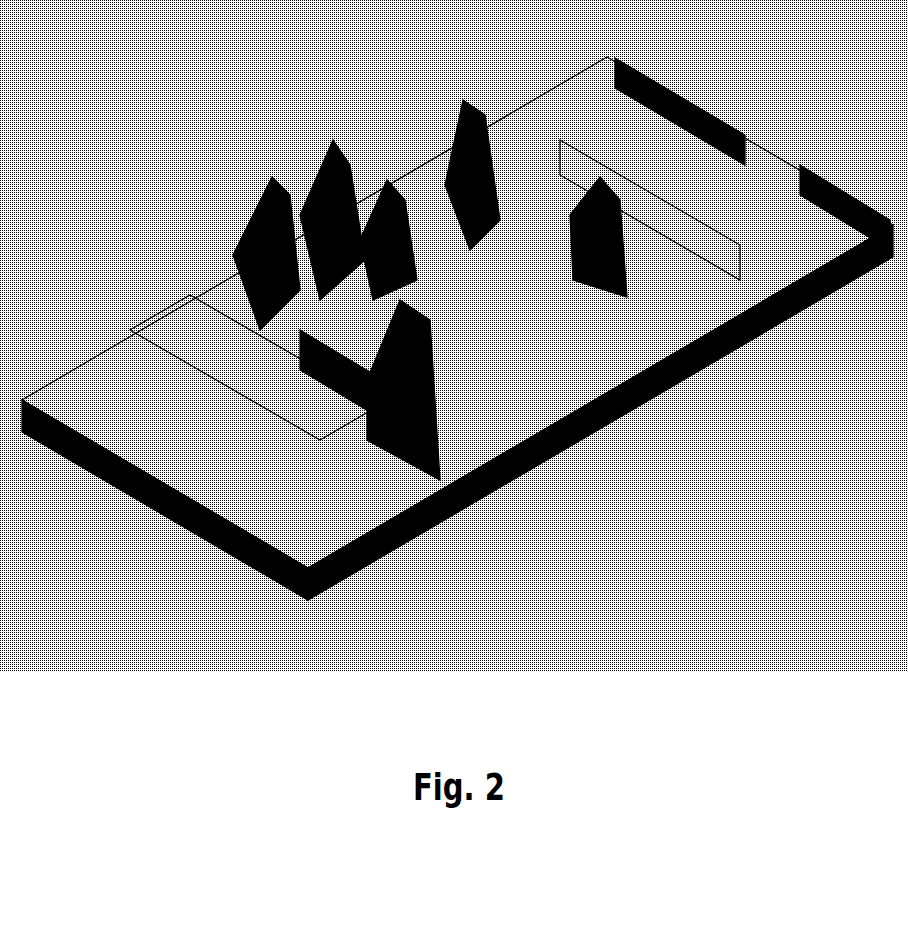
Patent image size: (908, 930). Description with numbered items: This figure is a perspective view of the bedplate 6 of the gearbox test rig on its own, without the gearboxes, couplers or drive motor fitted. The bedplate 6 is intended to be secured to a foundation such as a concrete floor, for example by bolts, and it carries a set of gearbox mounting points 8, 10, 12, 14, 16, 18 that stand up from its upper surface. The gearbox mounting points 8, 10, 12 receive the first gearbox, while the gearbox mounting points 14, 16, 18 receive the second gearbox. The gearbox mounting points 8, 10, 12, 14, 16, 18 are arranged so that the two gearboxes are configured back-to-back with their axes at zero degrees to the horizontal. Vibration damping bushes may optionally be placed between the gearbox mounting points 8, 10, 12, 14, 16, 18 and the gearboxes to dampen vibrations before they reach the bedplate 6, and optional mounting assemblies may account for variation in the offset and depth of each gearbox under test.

The bedplate 6 is at (185, 525).
The gearbox mounting point 8 is at (472, 140).
The gearbox mounting point 10 is at (615, 245).
The gearbox mounting point 12 is at (563, 258).
The gearbox mounting point 14 is at (275, 245).
The gearbox mounting point 16 is at (418, 348).
The gearbox mounting point 18 is at (310, 410).